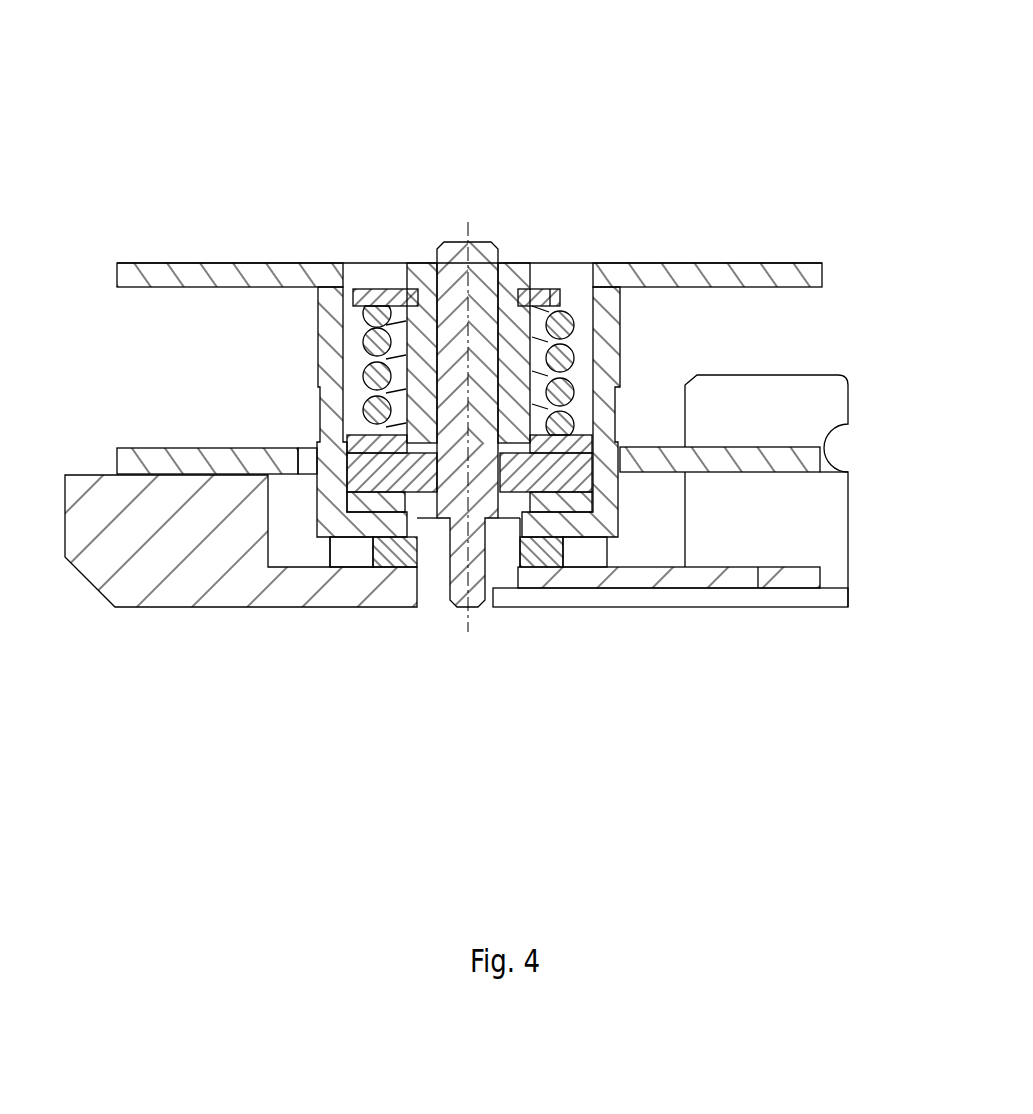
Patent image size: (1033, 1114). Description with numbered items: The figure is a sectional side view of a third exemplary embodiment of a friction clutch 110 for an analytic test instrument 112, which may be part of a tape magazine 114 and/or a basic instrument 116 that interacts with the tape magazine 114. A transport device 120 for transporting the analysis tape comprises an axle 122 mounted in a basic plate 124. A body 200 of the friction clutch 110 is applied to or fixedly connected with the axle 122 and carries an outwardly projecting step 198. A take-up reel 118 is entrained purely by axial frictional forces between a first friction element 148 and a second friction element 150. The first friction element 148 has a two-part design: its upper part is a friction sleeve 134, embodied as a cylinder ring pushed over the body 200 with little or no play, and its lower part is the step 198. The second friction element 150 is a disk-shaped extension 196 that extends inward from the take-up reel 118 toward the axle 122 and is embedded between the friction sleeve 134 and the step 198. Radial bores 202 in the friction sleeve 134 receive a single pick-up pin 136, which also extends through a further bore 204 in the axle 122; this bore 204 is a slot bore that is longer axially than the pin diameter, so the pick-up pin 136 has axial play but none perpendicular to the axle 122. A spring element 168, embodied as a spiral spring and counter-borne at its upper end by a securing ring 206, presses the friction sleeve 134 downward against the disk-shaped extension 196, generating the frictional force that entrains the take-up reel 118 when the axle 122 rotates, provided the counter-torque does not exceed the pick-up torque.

The friction clutch 110 is at (280, 405).
The analytic test instrument 112 is at (482, 382).
The tape magazine 114 is at (482, 382).
The basic instrument 116 is at (697, 156).
The take-up reel 118 is at (775, 273).
The transport device 120 is at (409, 588).
The axle 122 is at (453, 607).
The basic plate 124 is at (225, 592).
The friction sleeve 134 is at (596, 510).
The pick-up pin 136 is at (596, 458).
The first friction element 148 is at (585, 601).
The second friction element 150 is at (541, 560).
The spring element 168 is at (567, 313).
The disk-shaped extension 196 is at (565, 525).
The step 198 is at (545, 555).
The body 200 is at (513, 278).
The bore 202 is at (595, 482).
The bore 204 is at (450, 437).
The securing ring 206 is at (378, 290).